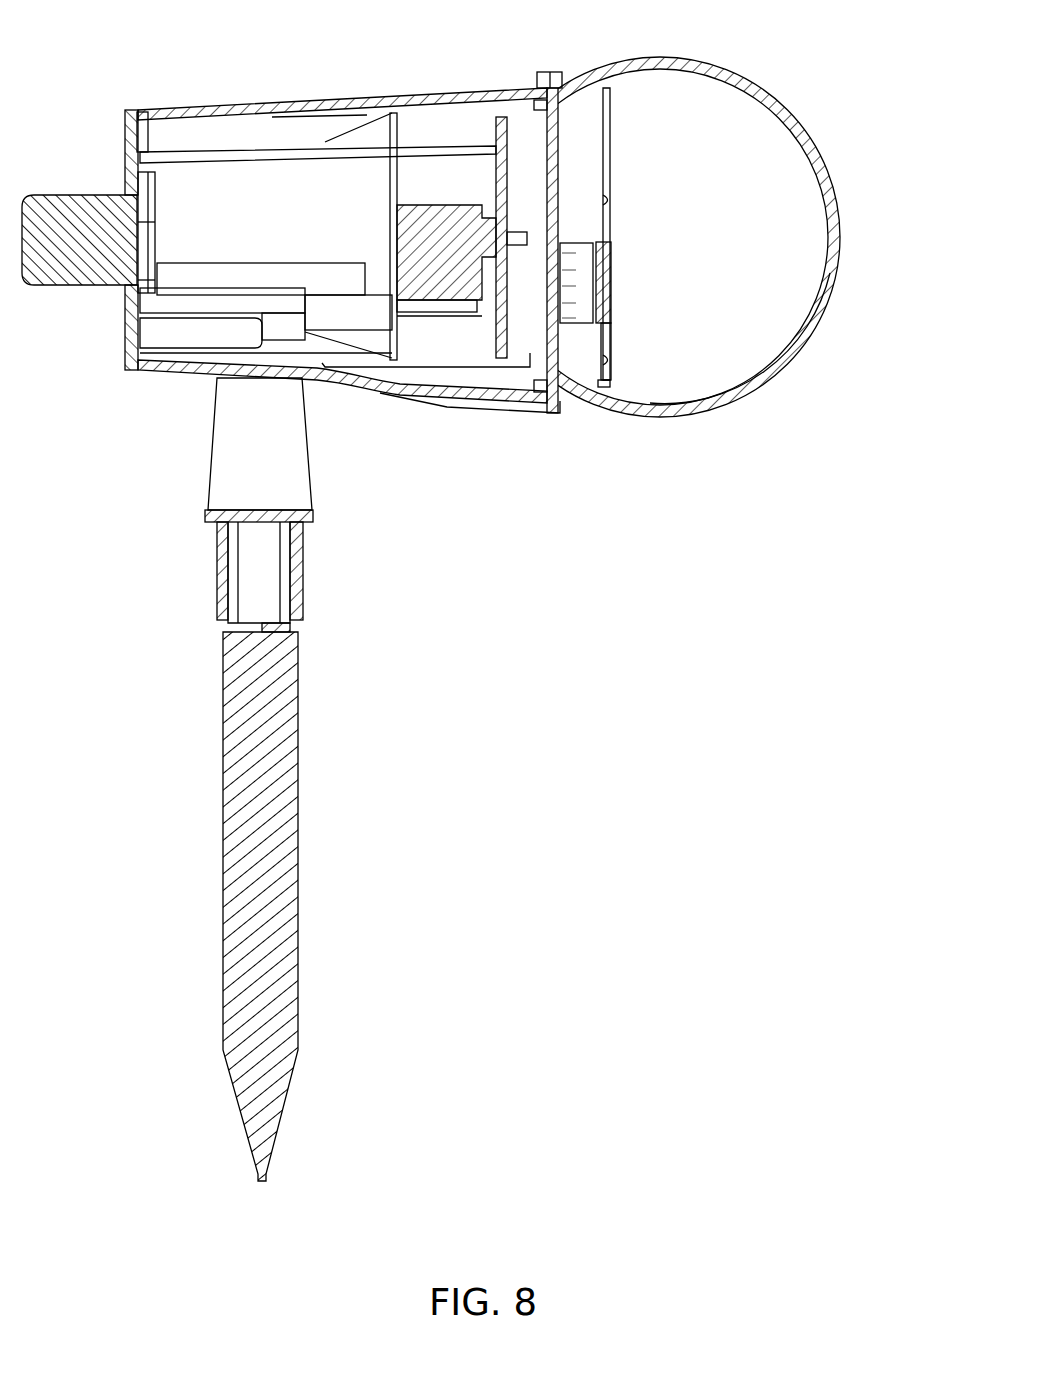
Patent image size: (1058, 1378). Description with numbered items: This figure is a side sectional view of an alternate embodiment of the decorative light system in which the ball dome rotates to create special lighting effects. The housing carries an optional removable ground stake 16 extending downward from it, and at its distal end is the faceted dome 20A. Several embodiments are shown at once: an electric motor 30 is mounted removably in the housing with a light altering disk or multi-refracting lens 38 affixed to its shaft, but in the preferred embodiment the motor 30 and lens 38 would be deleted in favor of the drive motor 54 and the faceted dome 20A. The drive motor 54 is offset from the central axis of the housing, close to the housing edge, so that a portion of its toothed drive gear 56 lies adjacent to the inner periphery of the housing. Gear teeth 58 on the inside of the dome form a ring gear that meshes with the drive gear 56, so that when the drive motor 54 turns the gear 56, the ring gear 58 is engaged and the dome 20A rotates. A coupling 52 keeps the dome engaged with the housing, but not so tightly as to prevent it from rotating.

The removable ground stake 16 is at (298, 818).
The dome 20A is at (727, 403).
The electric motor 30 is at (438, 285).
The light altering disk or multi-refracting lens 38 is at (508, 352).
The coupling 52 is at (543, 72).
The drive motor 54 is at (577, 268).
The drive gear 56 is at (610, 317).
The ring gear teeth 58 is at (610, 375).